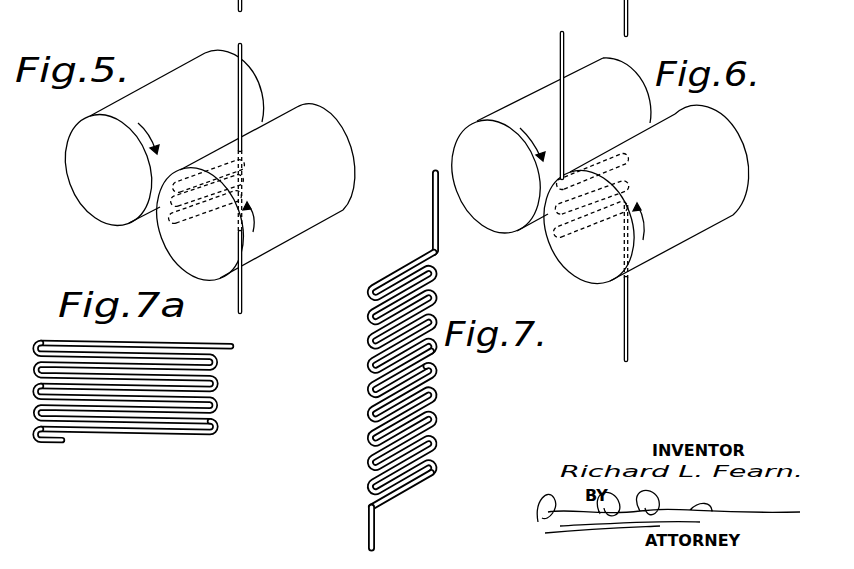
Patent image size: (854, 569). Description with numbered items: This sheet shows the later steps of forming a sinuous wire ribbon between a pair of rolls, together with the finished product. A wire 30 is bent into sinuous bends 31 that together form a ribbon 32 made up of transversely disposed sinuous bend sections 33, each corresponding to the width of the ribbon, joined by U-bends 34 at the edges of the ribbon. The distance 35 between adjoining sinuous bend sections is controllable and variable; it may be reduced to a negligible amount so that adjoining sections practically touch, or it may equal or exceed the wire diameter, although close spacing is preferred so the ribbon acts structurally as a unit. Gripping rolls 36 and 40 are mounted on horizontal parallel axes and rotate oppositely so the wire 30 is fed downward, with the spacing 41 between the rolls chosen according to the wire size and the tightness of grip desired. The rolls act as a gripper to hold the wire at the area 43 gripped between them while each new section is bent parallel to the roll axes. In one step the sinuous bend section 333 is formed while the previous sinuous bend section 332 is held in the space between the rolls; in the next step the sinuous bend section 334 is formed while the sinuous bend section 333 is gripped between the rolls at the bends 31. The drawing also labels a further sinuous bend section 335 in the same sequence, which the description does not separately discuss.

In FIG. 5, the wire 30 is at (243, 52).
In FIG. 6, the wire 30 is at (565, 46).
In FIG. 7, the wire 30 is at (431, 200).
In FIG. 7A, the wire 30 is at (170, 435).
In FIG. 7, the sinuous bends 31 is at (397, 271).
In FIG. 7A, the sinuous bends 31 is at (107, 434).
In FIG. 7, the ribbon 32 is at (367, 395).
In FIG. 7A, the ribbon 32 is at (145, 345).
In FIG. 7, the sinuous bend section 33 is at (414, 492).
In FIG. 5, the sinuous bend section 332 is at (247, 167).
In FIG. 5, the sinuous bend section 333 is at (210, 163).
In FIG. 6, the sinuous bend section 334 is at (594, 170).
In FIG. 6, the loop 335 is at (630, 175).
In FIG. 7, the U-bends 34 is at (438, 467).
In FIG. 7A, the U-bends 34 is at (220, 408).
In FIG. 5, the distance between adjoining sinuous bend sections 35 is at (248, 156).
In FIG. 6, the distance between adjoining sinuous bend sections 35 is at (565, 232).
In FIG. 7, the distance between adjoining sinuous bend sections 35 is at (368, 503).
In FIG. 7A, the distance between adjoining sinuous bend sections 35 is at (220, 373).
In FIG. 5, the gripping roll 36 is at (66, 173).
In FIG. 6, the gripping roll 36 is at (453, 143).
In FIG. 5, the gripping roll 40 is at (177, 253).
In FIG. 6, the gripping roll 40 is at (585, 275).
In FIG. 5, the spacing between the rolls 41 is at (152, 213).
In FIG. 6, the spacing between the rolls 41 is at (547, 222).
In FIG. 5, the area gripped between the rolls 43 is at (200, 164).
In FIG. 6, the area gripped between the rolls 43 is at (609, 208).